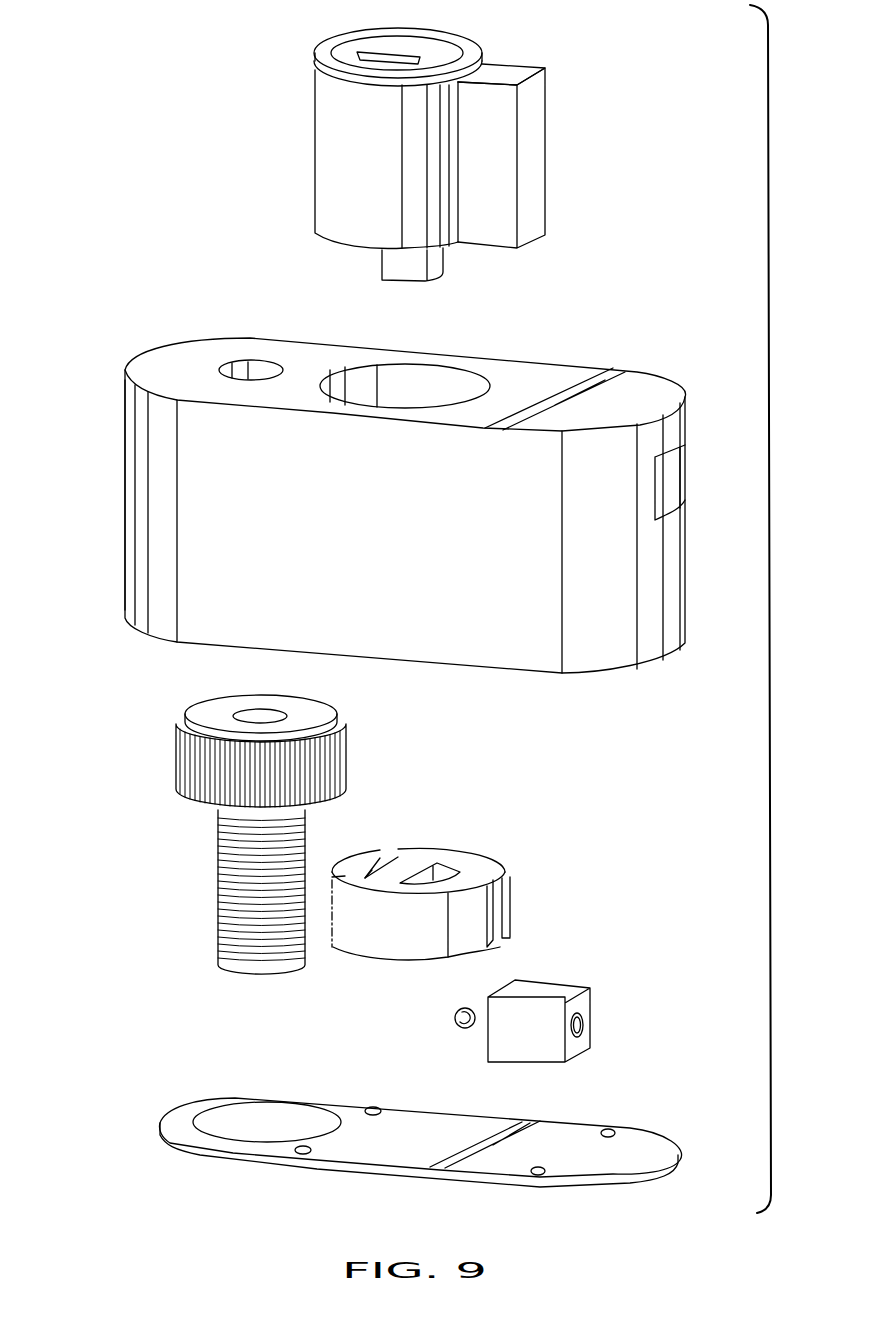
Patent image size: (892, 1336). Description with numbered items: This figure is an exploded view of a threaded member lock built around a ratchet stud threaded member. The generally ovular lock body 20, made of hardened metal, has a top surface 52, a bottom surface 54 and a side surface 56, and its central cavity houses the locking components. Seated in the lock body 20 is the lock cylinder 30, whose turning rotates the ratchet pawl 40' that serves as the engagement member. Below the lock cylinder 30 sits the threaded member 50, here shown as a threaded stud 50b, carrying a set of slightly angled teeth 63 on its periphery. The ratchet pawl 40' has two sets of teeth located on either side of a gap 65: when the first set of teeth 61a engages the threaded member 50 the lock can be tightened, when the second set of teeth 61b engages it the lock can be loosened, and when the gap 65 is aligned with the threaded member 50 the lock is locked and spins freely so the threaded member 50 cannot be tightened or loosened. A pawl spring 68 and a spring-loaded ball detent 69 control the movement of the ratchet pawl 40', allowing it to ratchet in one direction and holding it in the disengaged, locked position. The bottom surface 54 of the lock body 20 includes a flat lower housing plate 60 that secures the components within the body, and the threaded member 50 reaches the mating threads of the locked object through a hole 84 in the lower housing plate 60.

The lock body 20 is at (382, 524).
The lock cylinder 30 is at (327, 113).
The top surface 52 is at (573, 383).
The bottom surface 54 is at (175, 642).
The side surface 56 is at (442, 632).
The threaded member 50 is at (217, 834).
The teeth 63 is at (177, 748).
The threaded stud 50b is at (218, 877).
The ratchet pawl 40' is at (439, 874).
The first set of teeth 61a is at (332, 877).
The second set of teeth 61b is at (378, 857).
The gap 65 is at (372, 872).
The pawl spring 68 is at (587, 1027).
The ball detent 69 is at (462, 1030).
The lower housing plate 60 is at (420, 1141).
The hole 84 is at (260, 1120).